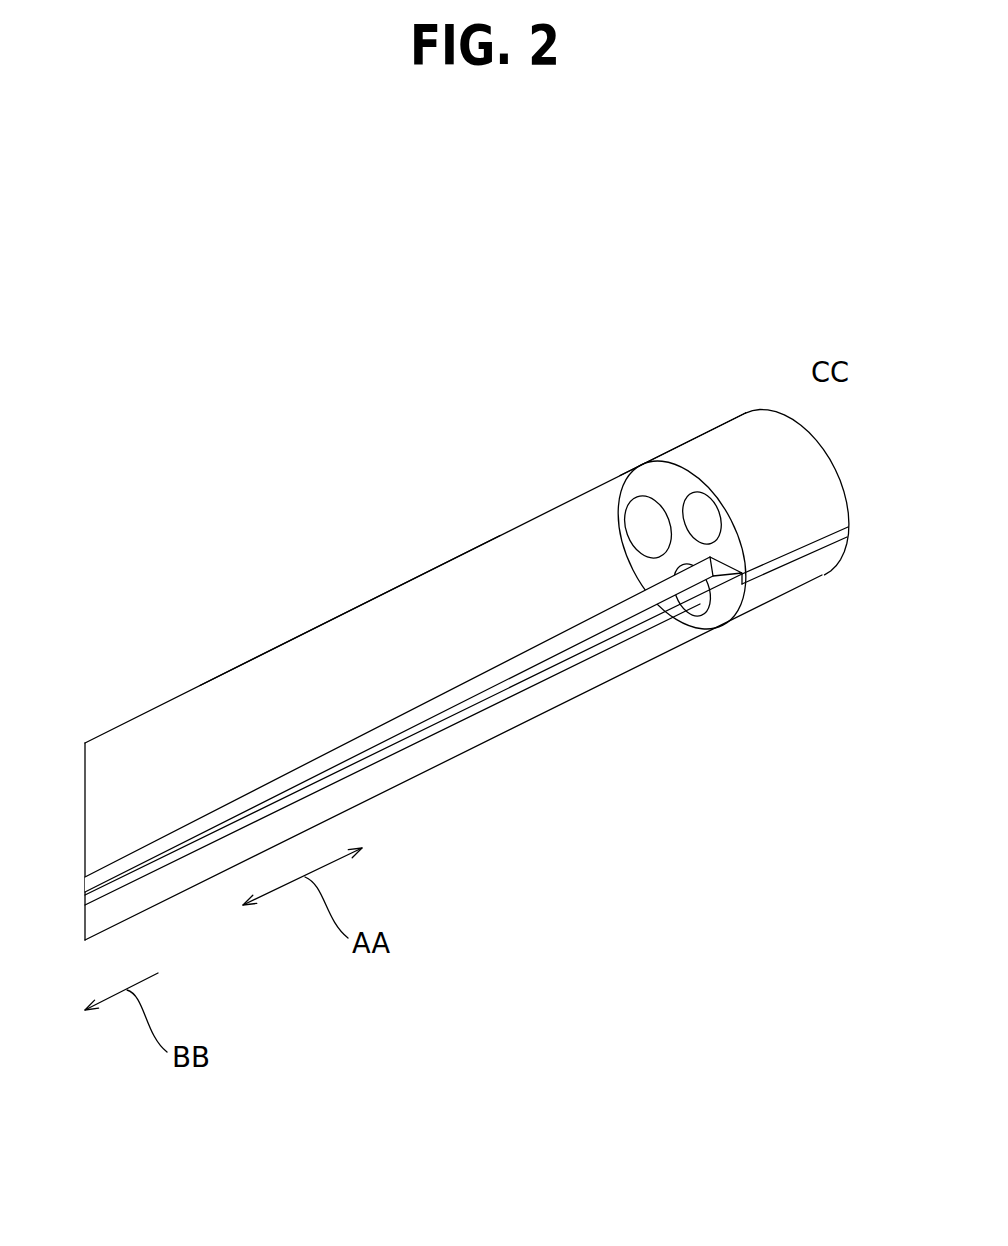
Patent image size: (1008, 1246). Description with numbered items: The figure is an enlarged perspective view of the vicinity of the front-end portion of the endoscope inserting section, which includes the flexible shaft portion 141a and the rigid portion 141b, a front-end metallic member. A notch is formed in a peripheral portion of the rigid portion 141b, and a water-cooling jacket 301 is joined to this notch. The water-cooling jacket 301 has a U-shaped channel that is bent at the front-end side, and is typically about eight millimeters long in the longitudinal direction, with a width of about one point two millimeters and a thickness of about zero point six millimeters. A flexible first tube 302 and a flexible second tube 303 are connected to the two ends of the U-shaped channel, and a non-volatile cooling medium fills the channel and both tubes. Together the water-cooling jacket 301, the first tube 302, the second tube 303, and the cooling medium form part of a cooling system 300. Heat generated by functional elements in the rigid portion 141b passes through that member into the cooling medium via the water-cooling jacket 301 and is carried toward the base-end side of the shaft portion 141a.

The cooling system 300 is at (637, 733).
The water-cooling jacket 301 is at (775, 565).
The first tube 302 is at (415, 732).
The second tube 303 is at (255, 800).
The shaft portion 141a is at (405, 583).
The rigid portion 141b is at (718, 457).